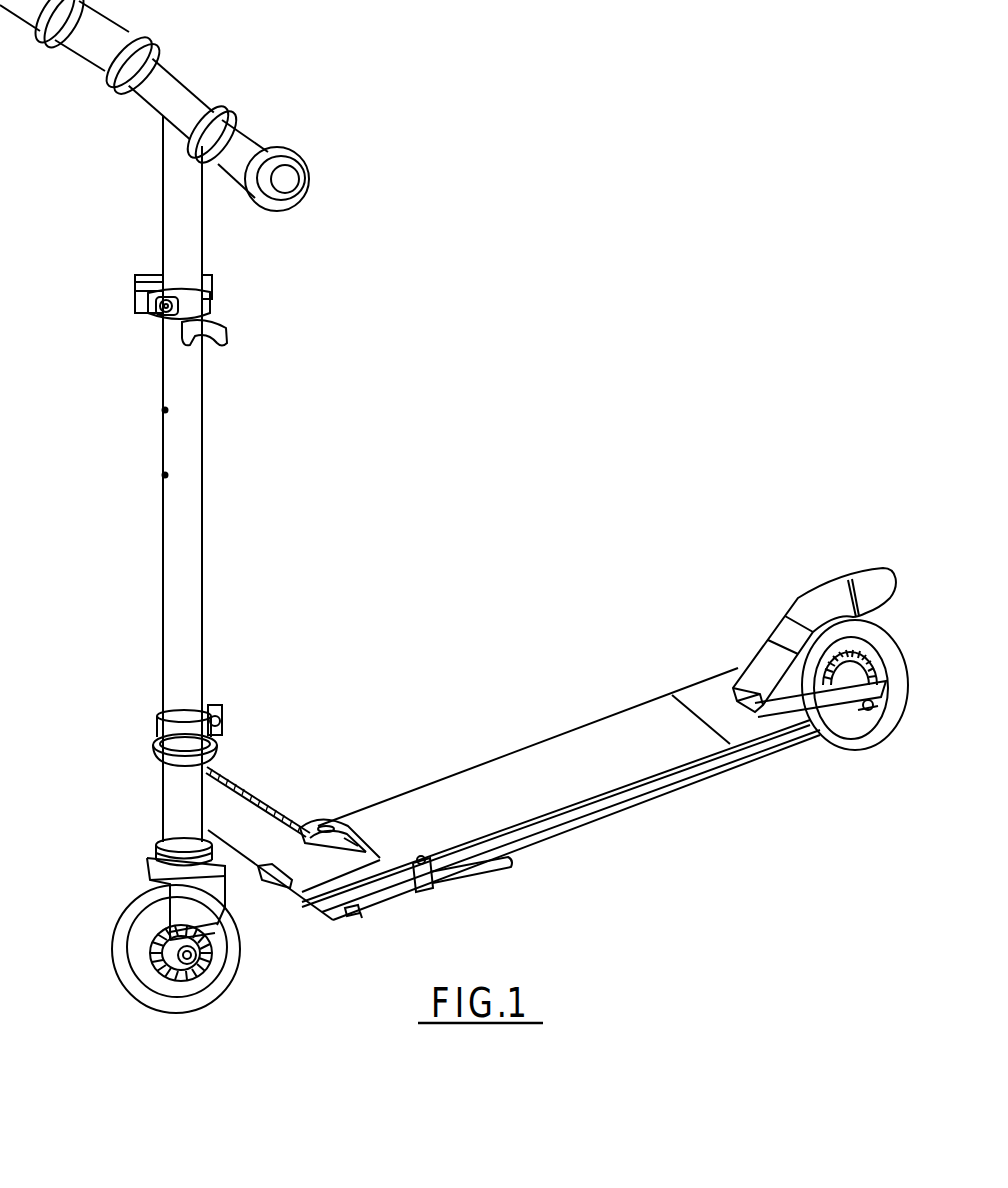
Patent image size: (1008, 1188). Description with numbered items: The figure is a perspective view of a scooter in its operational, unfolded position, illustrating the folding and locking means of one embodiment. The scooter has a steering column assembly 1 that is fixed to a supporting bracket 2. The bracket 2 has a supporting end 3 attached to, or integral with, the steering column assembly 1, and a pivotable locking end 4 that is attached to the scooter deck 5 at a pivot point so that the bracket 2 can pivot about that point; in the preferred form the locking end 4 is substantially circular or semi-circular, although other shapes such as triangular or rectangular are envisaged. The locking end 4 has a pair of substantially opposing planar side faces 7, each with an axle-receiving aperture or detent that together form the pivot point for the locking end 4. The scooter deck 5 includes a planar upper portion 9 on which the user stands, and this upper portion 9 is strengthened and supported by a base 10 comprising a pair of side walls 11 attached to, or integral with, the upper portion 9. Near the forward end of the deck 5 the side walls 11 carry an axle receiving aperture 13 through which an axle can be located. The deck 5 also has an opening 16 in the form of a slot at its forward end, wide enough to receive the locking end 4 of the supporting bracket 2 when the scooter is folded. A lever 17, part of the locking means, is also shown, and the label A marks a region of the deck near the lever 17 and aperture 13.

The steering column assembly 1 is at (183, 797).
The supporting bracket 2 is at (277, 812).
The supporting end 3 is at (237, 812).
The pivotable locking end 4 is at (347, 836).
The scooter deck 5 is at (569, 774).
The planar side faces 7 is at (335, 856).
The planar upper portion 9 is at (595, 738).
The base 10 is at (697, 700).
The side walls 11 is at (673, 772).
The axle receiving aperture 13 is at (353, 909).
The opening 16 is at (287, 890).
The lever 17 is at (470, 874).
The pivot axis A is at (365, 930).